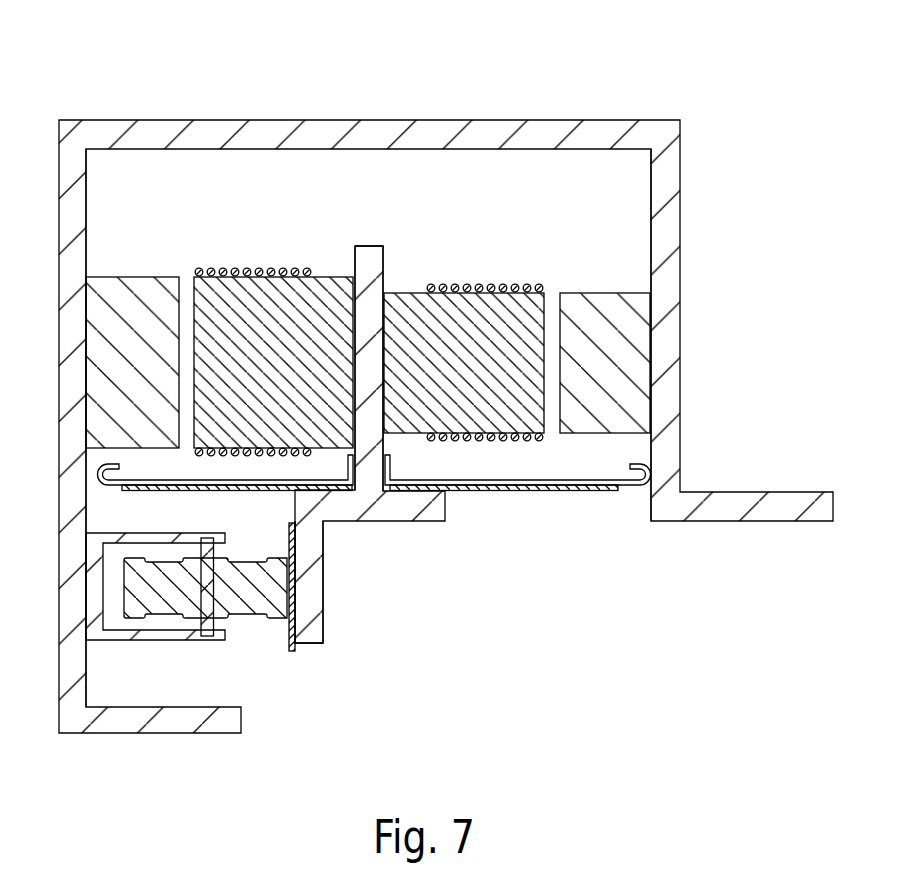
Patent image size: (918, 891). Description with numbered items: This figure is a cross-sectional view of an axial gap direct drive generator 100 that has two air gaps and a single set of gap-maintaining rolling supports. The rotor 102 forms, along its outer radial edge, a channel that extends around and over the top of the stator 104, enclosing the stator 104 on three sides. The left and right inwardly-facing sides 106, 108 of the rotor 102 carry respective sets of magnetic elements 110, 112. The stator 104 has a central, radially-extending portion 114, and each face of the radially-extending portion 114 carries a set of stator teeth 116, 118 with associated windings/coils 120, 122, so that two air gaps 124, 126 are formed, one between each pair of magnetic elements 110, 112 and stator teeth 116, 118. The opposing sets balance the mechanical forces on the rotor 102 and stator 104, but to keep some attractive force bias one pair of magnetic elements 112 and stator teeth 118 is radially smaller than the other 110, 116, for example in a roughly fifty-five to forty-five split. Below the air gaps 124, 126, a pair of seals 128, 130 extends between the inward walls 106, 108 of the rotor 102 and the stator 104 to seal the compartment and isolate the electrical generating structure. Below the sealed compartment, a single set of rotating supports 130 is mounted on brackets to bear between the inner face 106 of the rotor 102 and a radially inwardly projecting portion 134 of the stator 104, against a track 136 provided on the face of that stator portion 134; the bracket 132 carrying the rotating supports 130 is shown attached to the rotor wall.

The generator 100 is at (409, 90).
The rotor 102 is at (242, 120).
The stator 104 is at (390, 505).
The left inwardly-facing side 106 is at (88, 163).
The right inwardly-facing side 108 is at (650, 178).
The magnetic elements 110 is at (125, 275).
The magnetic elements 112 is at (610, 293).
The radially-extending portion 114 is at (373, 255).
The stator teeth 116 is at (335, 297).
The stator teeth 118 is at (407, 313).
The windings/coils 120 is at (235, 268).
The windings/coils 122 is at (503, 287).
The air gap 124 is at (186, 422).
The air gap 126 is at (548, 425).
The seal 128 is at (270, 482).
The rotating supports 130 is at (475, 484).
The bracket 132 is at (158, 637).
The radially inwardly projecting portion 134 is at (313, 593).
The track 136 is at (289, 532).